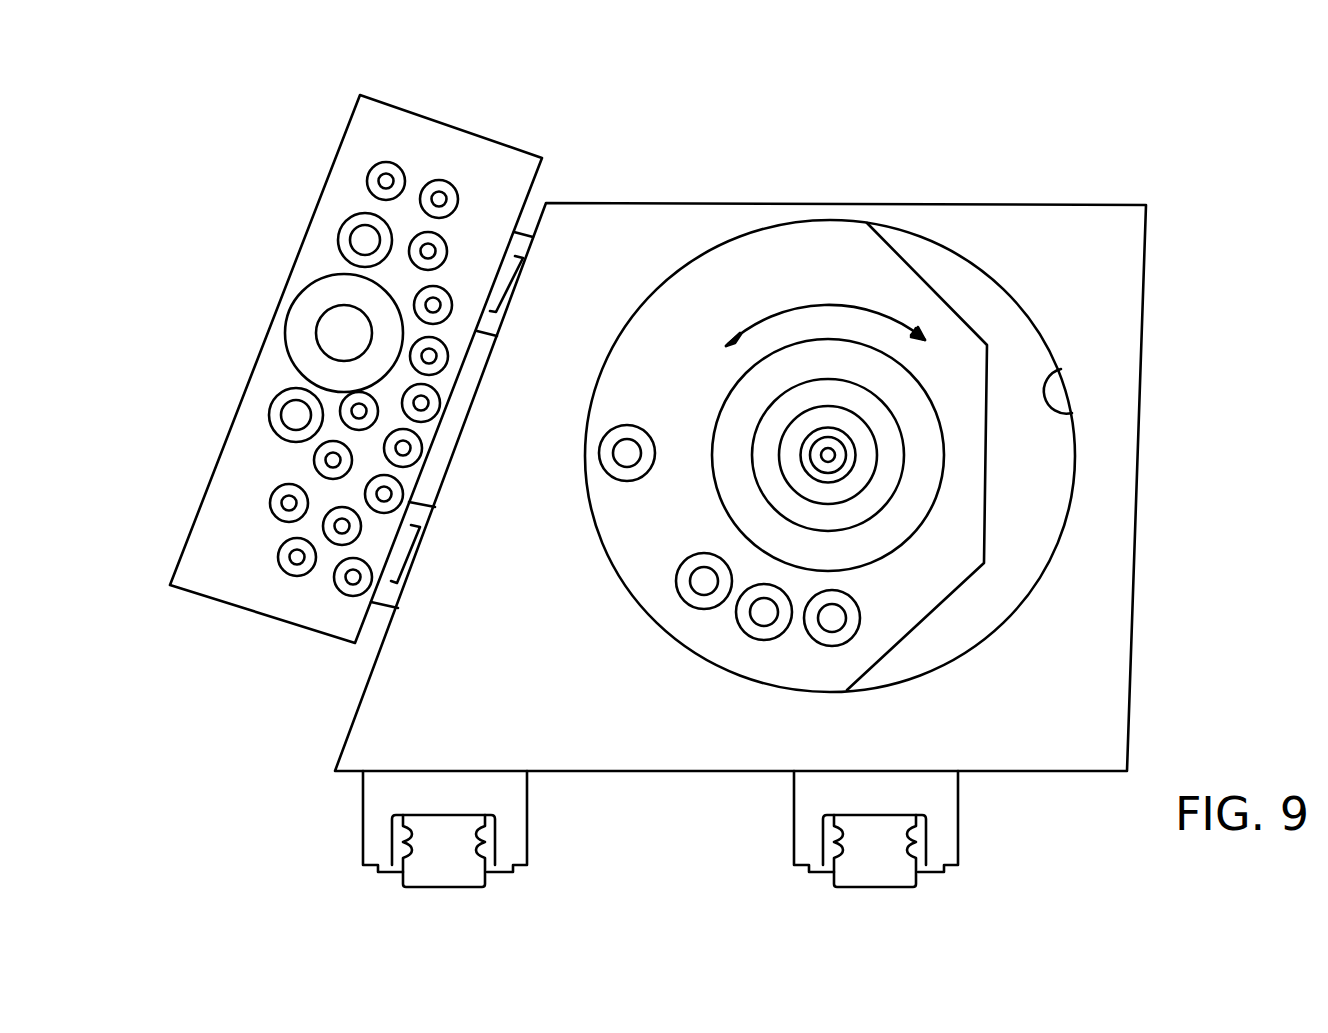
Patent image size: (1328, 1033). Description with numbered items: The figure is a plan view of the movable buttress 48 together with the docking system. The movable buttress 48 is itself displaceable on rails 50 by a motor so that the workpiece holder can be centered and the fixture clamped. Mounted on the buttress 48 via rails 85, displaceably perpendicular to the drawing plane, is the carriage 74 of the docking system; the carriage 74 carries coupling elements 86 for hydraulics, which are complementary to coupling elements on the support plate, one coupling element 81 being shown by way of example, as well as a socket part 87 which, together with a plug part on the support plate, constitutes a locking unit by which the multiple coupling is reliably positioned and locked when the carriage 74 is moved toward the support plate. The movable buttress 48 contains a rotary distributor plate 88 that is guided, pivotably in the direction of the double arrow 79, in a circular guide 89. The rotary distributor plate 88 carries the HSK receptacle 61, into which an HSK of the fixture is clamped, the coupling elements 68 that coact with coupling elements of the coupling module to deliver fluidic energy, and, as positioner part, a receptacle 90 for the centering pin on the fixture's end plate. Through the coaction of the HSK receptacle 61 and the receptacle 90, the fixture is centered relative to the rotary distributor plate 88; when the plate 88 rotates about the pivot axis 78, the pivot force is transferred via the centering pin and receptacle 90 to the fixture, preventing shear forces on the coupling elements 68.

The movable buttress 48 is at (1027, 228).
The rails 50 is at (453, 868).
The HSK receptacle 61 is at (917, 462).
The coupling element 68 is at (692, 598).
The carriage 74 is at (477, 158).
The pivot axis 78 is at (833, 451).
The double arrow 79 is at (857, 307).
The coupling element 81 is at (389, 174).
The rails 85 is at (522, 286).
The coupling elements 86 is at (355, 223).
The socket part 87 is at (313, 310).
The rotary distributor plate 88 is at (802, 283).
The circular guide 89 is at (1073, 414).
The receptacle 90 is at (613, 455).